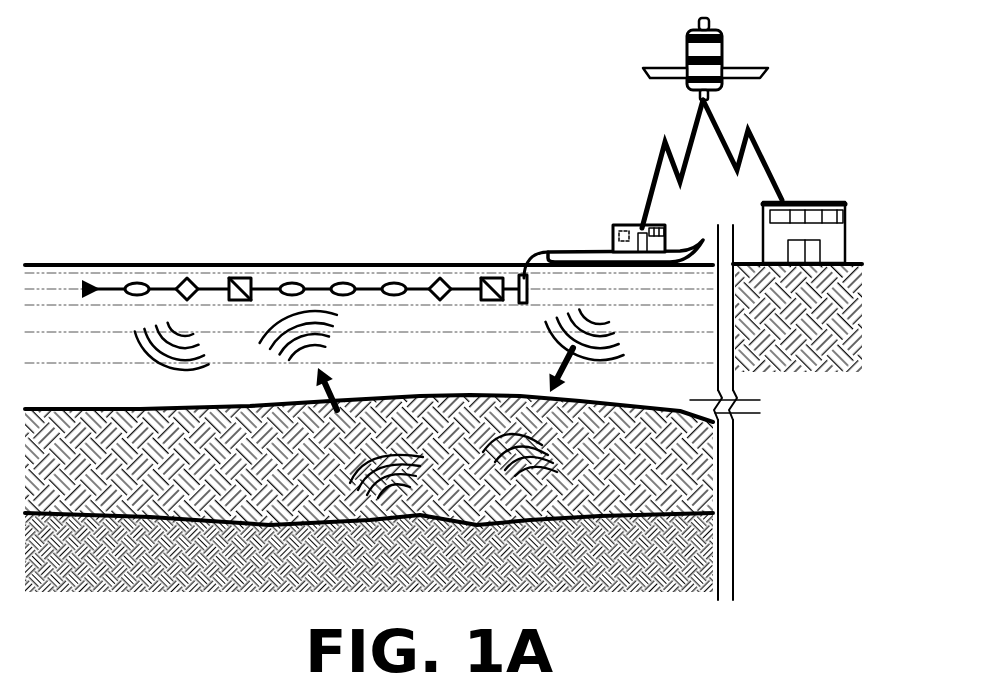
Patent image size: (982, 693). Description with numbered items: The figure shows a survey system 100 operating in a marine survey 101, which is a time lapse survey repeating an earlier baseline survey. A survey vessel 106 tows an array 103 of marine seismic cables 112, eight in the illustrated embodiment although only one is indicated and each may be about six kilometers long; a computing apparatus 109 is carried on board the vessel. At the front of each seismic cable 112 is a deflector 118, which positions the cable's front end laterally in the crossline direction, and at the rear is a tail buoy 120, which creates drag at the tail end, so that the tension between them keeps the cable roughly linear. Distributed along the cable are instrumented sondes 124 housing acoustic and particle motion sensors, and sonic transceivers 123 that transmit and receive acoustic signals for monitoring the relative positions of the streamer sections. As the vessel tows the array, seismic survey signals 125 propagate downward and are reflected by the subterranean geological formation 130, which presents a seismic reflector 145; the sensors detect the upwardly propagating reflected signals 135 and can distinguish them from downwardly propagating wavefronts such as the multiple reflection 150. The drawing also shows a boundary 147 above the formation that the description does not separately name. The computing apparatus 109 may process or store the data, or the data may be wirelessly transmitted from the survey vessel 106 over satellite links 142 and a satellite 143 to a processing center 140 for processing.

The survey system 100 is at (393, 173).
The marine survey 101 is at (118, 82).
The towed array 103 is at (127, 196).
The survey vessel 106 is at (688, 240).
The computing apparatus 109 is at (612, 223).
The marine seismic cable 112 is at (537, 262).
The deflector 118 is at (532, 290).
The tail buoy 120 is at (84, 280).
The sonic transceiver 123 is at (187, 273).
The instrumented sonde 124 is at (392, 280).
The seismic survey signals 125 is at (548, 350).
The subterranean geological formation 130 is at (293, 480).
The reflected signals 135 is at (342, 338).
The processing center 140 is at (818, 200).
The satellite links 142 is at (655, 175).
The satellite 143 is at (645, 68).
The seismic reflector 145 is at (585, 512).
The seafloor 147 is at (152, 409).
The multiple reflection 150 is at (138, 353).